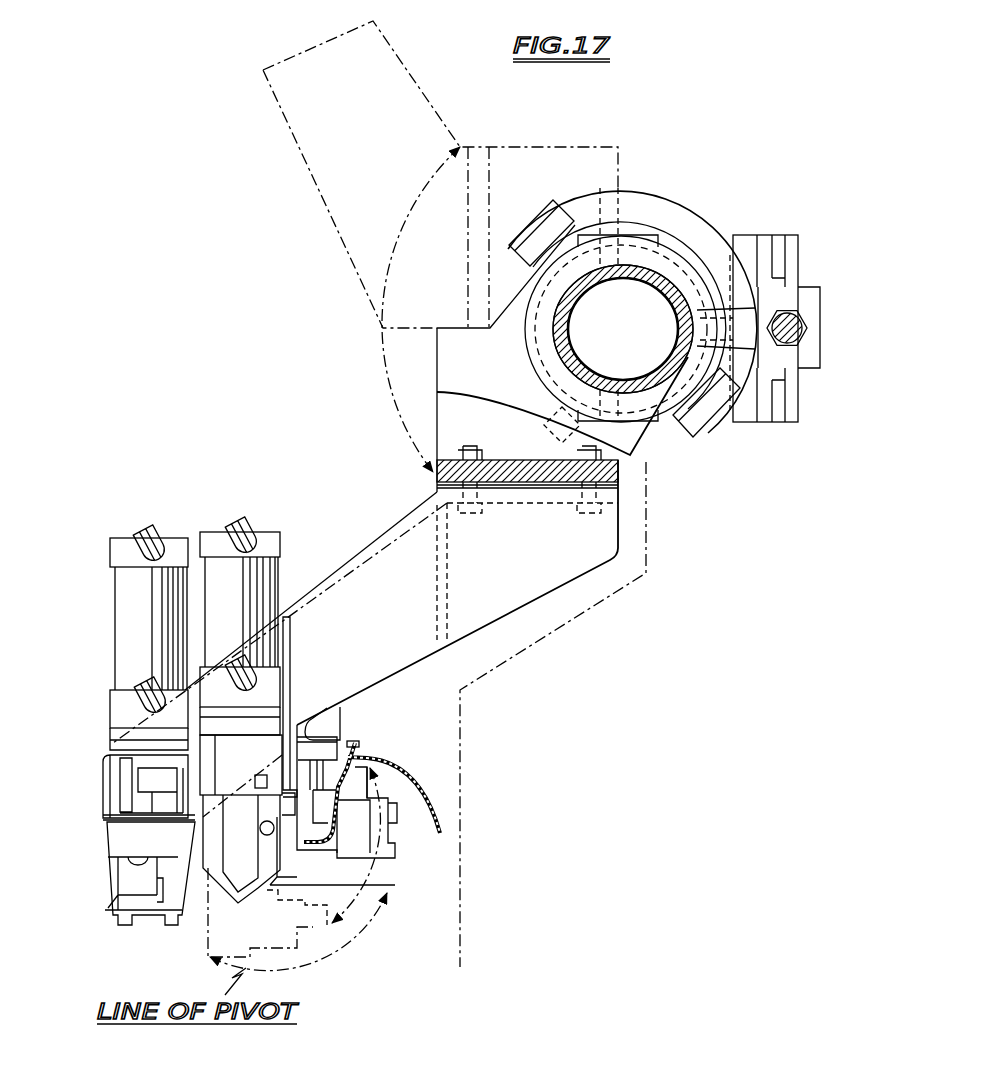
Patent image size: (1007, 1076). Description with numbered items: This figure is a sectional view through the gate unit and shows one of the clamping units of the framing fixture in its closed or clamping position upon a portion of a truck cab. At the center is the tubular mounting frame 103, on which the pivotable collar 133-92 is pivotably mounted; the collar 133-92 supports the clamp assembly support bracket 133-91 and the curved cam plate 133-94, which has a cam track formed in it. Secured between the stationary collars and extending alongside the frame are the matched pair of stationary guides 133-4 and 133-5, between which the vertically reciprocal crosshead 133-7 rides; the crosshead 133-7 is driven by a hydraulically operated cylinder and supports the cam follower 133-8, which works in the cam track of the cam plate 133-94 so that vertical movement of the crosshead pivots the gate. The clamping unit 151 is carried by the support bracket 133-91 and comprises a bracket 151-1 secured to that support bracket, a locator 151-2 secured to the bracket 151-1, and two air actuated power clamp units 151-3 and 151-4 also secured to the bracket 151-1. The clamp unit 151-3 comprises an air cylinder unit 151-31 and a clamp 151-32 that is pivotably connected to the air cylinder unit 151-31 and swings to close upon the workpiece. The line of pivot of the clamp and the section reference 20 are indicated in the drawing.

The tubular mounting frame 103 is at (649, 291).
The pivotable collar 133-92 is at (440, 246).
The curved cam plate 133-94 is at (728, 195).
The stationary guide 133-5 is at (787, 226).
The crosshead 133-7 is at (768, 301).
The cam follower 133-8 is at (623, 329).
The stationary guide 133-4 is at (771, 423).
The clamp assembly support bracket 133-91 is at (437, 412).
The pivot axis 20 is at (680, 472).
The clamping unit 151 is at (420, 500).
The bracket 151-1 is at (378, 572).
The locator 151-2 is at (335, 768).
The air actuated power clamp unit 151-3 is at (270, 532).
The air cylinder unit 151-31 is at (213, 532).
The clamp 151-32 is at (315, 885).
The air actuated power clamp unit 151-4 is at (128, 538).